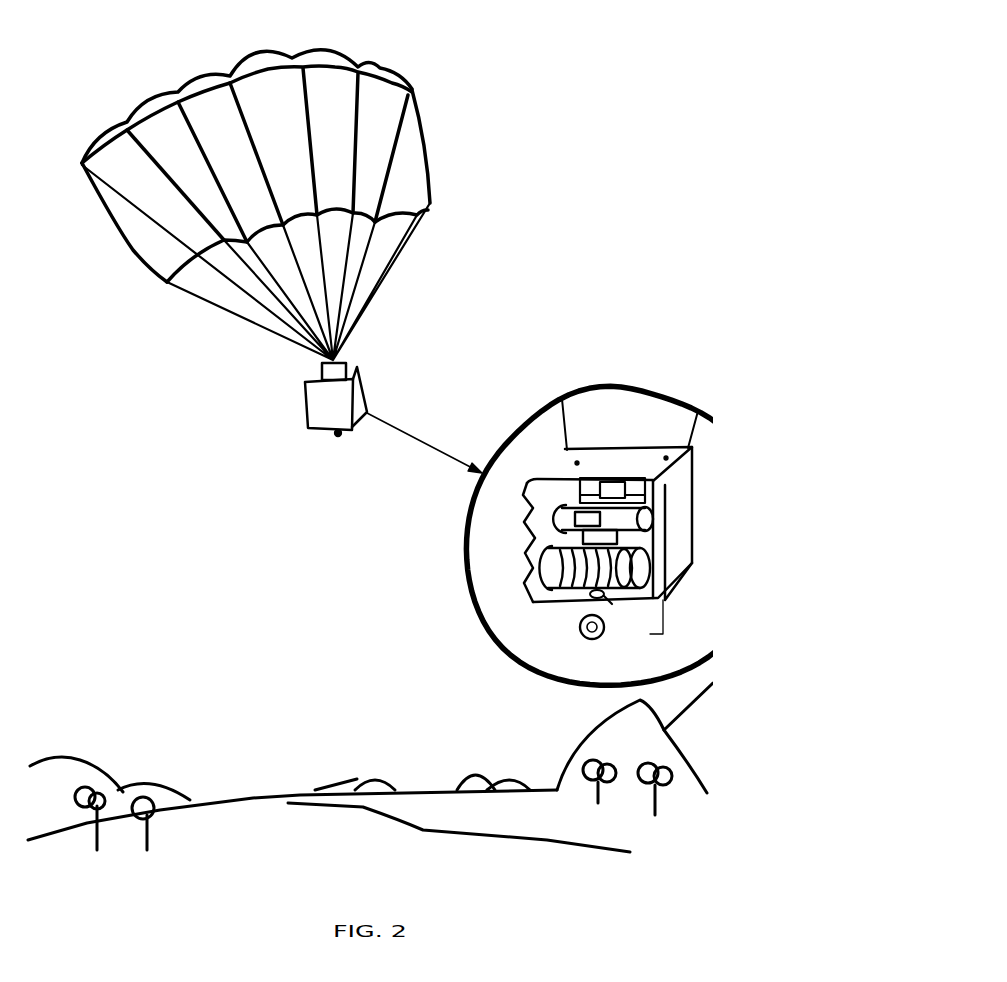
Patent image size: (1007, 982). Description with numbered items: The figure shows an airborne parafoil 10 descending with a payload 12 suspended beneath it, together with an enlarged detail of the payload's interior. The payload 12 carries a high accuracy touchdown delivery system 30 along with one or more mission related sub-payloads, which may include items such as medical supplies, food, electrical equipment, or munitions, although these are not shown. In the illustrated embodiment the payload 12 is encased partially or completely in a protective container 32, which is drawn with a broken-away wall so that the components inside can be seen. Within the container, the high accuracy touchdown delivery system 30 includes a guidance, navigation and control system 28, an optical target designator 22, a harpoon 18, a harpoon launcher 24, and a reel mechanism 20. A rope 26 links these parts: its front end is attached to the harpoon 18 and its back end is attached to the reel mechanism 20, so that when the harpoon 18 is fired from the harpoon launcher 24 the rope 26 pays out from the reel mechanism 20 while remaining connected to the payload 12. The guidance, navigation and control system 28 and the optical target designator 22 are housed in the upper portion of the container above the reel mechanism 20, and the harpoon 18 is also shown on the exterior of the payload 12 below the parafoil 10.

The airborne parafoil 10 is at (338, 118).
The payload 12 is at (325, 405).
The harpoon 18 is at (336, 436).
The reel mechanism 20 is at (546, 565).
The optical target designator 22 is at (598, 515).
The harpoon launcher 24 is at (603, 594).
The rope 26 is at (595, 593).
The guidance, navigation and control (GNC) system 28 is at (618, 483).
The high accuracy touchdown delivery system 30 is at (672, 542).
The protective container 32 is at (525, 540).